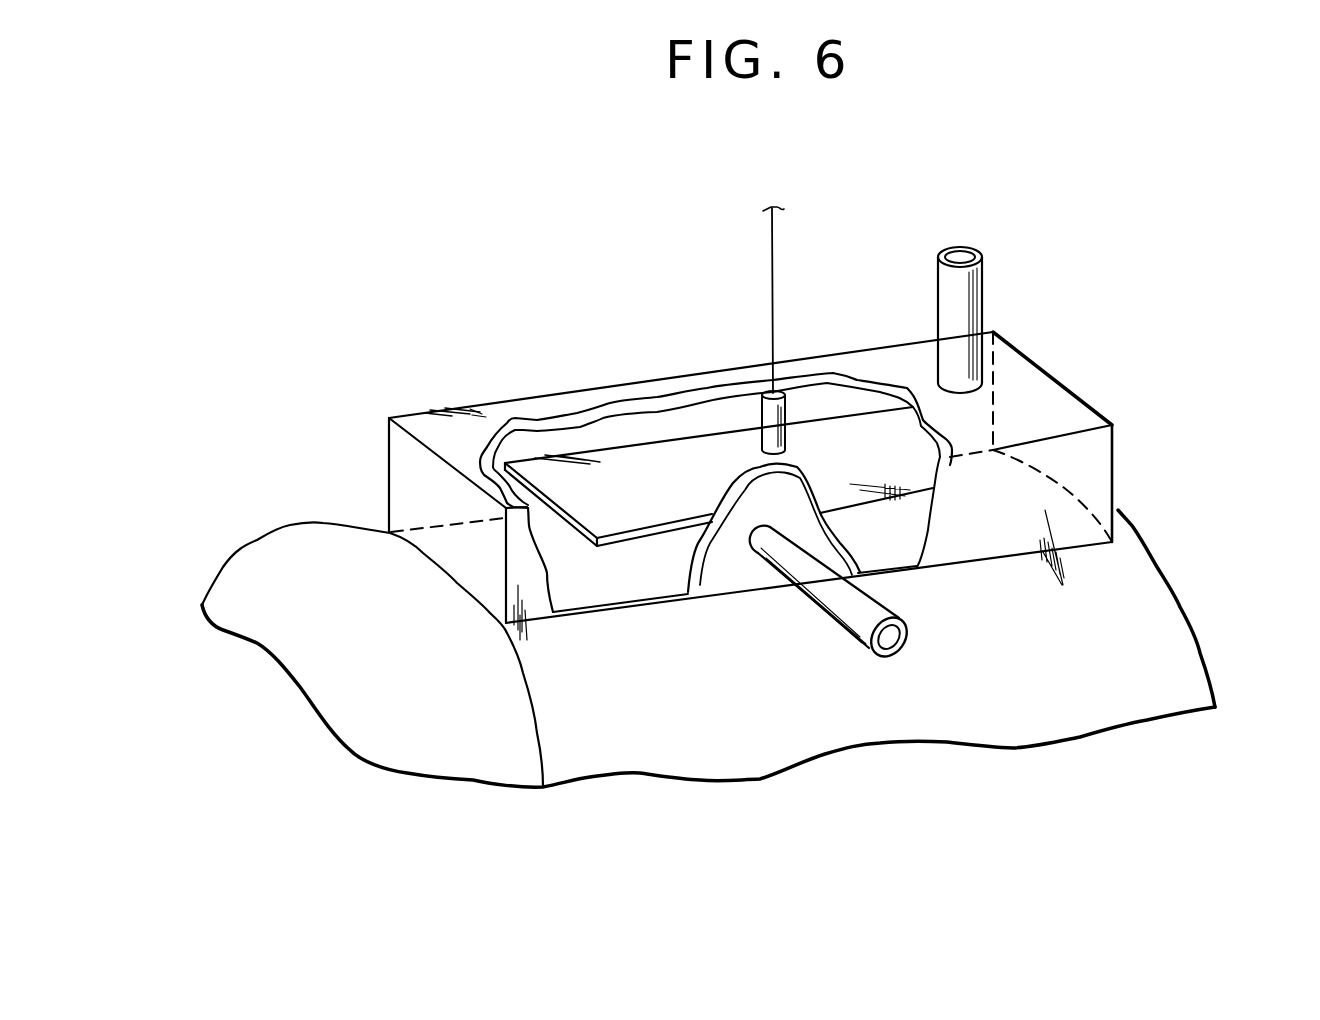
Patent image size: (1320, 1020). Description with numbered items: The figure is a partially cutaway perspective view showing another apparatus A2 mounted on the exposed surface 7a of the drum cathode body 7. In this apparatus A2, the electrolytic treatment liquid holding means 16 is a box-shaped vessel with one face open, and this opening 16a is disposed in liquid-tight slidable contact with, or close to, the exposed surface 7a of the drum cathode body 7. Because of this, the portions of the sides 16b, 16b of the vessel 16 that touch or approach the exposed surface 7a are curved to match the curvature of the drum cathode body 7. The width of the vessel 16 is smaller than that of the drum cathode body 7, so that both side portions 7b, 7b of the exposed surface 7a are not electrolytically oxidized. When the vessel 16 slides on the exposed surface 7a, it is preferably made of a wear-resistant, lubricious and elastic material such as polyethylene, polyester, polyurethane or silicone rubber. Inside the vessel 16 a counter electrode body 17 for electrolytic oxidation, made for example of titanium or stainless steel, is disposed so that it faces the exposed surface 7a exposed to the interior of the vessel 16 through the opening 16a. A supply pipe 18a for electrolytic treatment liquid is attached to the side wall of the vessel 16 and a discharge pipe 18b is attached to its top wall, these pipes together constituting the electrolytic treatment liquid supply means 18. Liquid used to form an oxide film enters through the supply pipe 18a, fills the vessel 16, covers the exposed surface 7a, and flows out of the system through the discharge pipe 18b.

The drum cathode body 7 is at (1180, 593).
The exposed surface 7a is at (640, 555).
The side portions 7b is at (426, 562).
The electrolytic treatment liquid holding means 16 is at (720, 532).
The opening 16a is at (588, 604).
The sides 16b is at (430, 485).
The counter electrode body 17 is at (647, 463).
The electrolytic treatment liquid supply means 18 is at (896, 550).
The supply pipe 18a is at (853, 647).
The discharge pipe 18b is at (957, 360).
The apparatus A2 is at (995, 218).